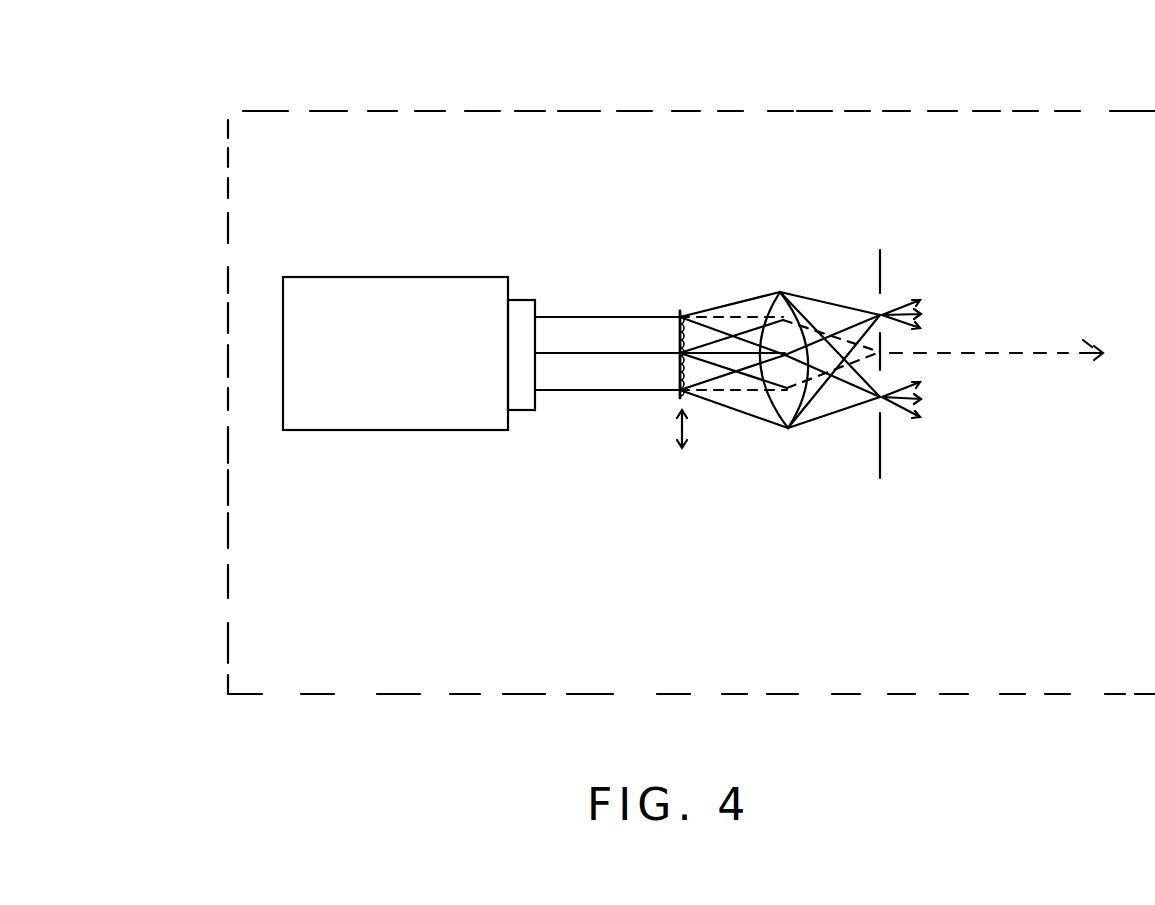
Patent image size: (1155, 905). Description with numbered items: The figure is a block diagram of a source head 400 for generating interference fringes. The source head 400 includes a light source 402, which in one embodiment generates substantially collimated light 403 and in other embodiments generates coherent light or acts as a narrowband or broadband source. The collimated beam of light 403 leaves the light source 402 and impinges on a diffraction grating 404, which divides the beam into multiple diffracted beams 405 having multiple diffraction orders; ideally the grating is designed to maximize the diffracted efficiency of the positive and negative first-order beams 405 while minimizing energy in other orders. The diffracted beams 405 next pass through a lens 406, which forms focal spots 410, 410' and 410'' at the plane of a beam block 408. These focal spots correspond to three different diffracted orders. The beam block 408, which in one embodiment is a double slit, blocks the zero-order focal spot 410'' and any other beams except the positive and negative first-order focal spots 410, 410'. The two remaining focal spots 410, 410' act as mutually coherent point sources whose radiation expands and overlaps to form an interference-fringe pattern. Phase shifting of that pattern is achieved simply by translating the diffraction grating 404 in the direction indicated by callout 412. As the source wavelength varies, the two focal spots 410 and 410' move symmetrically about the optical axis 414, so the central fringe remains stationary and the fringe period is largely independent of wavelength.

The source head 400 is at (582, 111).
The light source 402 is at (403, 272).
The substantially collimated light 403 is at (583, 315).
The diffraction grating 404 is at (679, 314).
The diffracted beams 405 is at (730, 287).
The lens 406 is at (780, 290).
The beam block 408 is at (880, 252).
The focal spot 410 is at (943, 275).
The focal spot 410' is at (929, 431).
The zero-order focal spot 410'' is at (953, 326).
The callout 412 is at (677, 438).
The optical axis 414 is at (1058, 357).